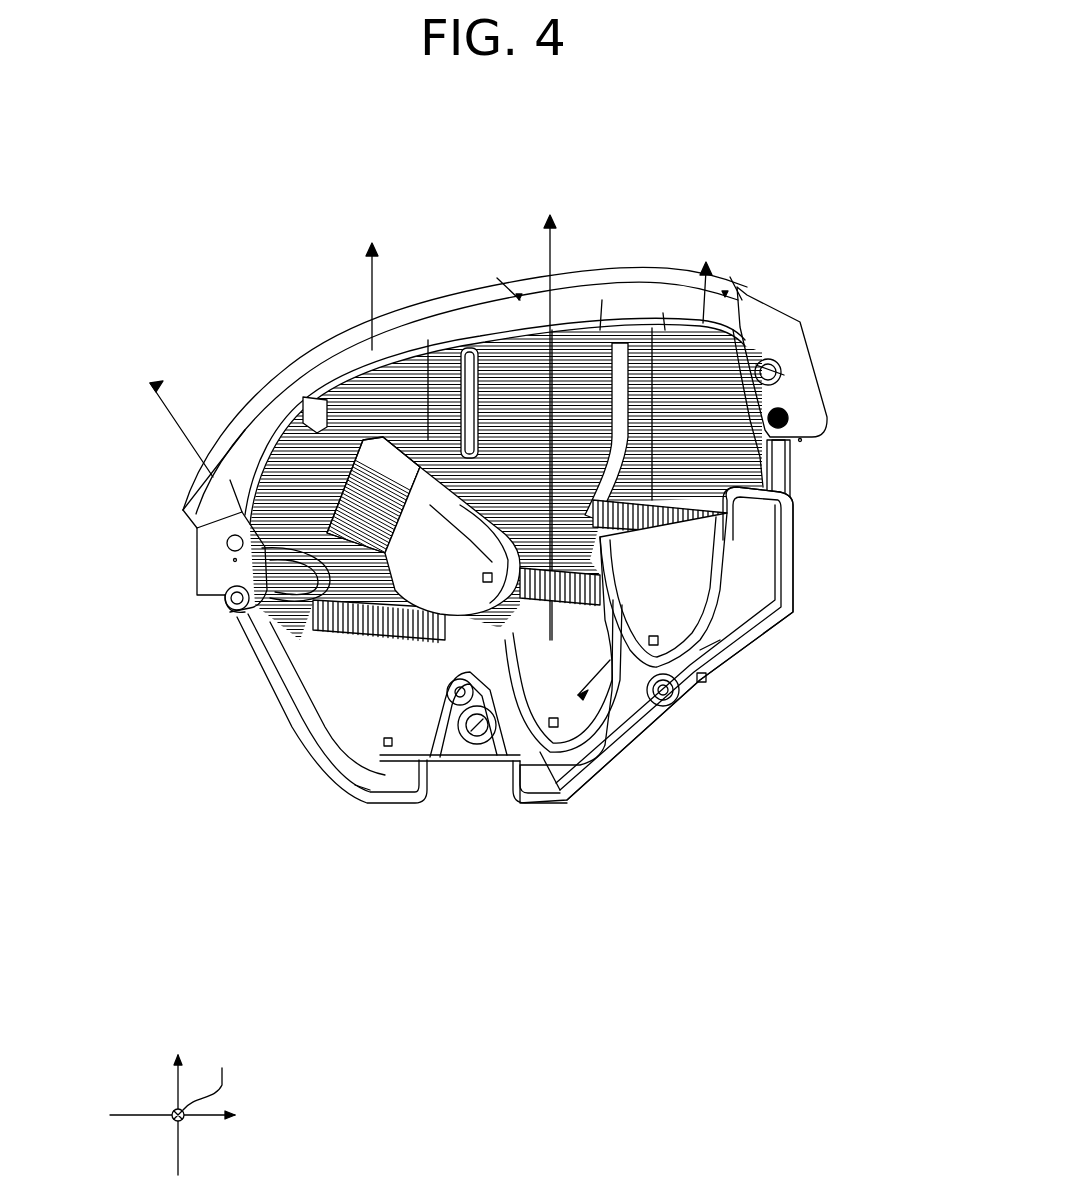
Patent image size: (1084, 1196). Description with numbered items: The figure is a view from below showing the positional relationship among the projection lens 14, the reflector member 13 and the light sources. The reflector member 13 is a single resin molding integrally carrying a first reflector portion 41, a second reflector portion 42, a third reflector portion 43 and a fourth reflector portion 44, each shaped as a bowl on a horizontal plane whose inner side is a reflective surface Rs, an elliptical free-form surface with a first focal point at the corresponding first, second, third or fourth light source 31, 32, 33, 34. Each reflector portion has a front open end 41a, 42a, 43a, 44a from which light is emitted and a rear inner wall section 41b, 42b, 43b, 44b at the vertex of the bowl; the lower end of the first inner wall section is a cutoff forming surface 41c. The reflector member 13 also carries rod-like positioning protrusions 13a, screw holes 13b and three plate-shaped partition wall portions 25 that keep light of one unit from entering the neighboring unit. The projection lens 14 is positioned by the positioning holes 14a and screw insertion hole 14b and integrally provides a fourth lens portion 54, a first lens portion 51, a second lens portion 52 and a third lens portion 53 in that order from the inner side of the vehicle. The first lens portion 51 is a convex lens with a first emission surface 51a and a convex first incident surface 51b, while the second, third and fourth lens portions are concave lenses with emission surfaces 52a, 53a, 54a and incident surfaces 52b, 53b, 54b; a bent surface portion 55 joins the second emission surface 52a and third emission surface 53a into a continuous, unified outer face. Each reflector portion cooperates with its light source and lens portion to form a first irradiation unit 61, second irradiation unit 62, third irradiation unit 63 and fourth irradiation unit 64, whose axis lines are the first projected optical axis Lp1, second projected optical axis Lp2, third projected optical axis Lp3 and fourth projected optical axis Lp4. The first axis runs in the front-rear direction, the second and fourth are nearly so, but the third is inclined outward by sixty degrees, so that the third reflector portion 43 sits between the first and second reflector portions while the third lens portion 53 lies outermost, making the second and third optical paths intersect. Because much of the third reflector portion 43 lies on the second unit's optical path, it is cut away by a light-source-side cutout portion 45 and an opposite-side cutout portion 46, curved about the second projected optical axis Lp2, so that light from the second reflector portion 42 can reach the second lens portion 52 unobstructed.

The reflector member 13 is at (273, 723).
The positioning protrusion 13a is at (800, 440).
The screw hole 13b is at (805, 372).
The projection lens 14 is at (793, 262).
The positioning hole 14a is at (790, 416).
The screw insertion hole 14b is at (782, 366).
The partition wall portion 25 is at (428, 340).
The first light source 31 is at (545, 800).
The second light source 32 is at (375, 780).
The third light source 33 is at (683, 583).
The fourth light source 34 is at (681, 690).
The first reflector portion 41 is at (600, 740).
The open end 41a is at (463, 710).
The inner wall section 41b is at (560, 780).
The cutoff forming surface 41c is at (556, 730).
The second reflector portion 42 is at (330, 770).
The open end 42a is at (300, 596).
The inner wall section 42b is at (397, 805).
The third reflector portion 43 is at (432, 580).
The open end 43a is at (186, 505).
The inner wall section 43b is at (503, 770).
The fourth reflector portion 44 is at (687, 597).
The open end 44a is at (790, 470).
The inner wall section 44b is at (706, 682).
The light-source-side cutout portion 45 is at (372, 712).
The opposite-side cutout portion 46 is at (468, 348).
The first lens portion 51 is at (497, 340).
The first emission surface 51a is at (519, 300).
The first incident surface 51b is at (600, 330).
The second lens portion 52 is at (322, 360).
The second emission surface 52a is at (340, 370).
The second incident surface 52b is at (378, 345).
The third lens portion 53 is at (210, 477).
The third emission surface 53a is at (232, 430).
The third incident surface 53b is at (247, 453).
The fourth lens portion 54 is at (730, 277).
The fourth emission surface 54a is at (663, 313).
The fourth incident surface 54b is at (687, 317).
The bent surface portion 55 is at (272, 345).
The first irradiation unit 61 is at (580, 780).
The second irradiation unit 62 is at (352, 790).
The third irradiation unit 63 is at (524, 750).
The fourth irradiation unit 64 is at (697, 660).
The first projected optical axis Lp1 is at (555, 232).
The second projected optical axis Lp2 is at (372, 243).
The third projected optical axis Lp3 is at (150, 383).
The fourth projected optical axis Lp4 is at (747, 303).
The reflective surface Rs is at (695, 845).